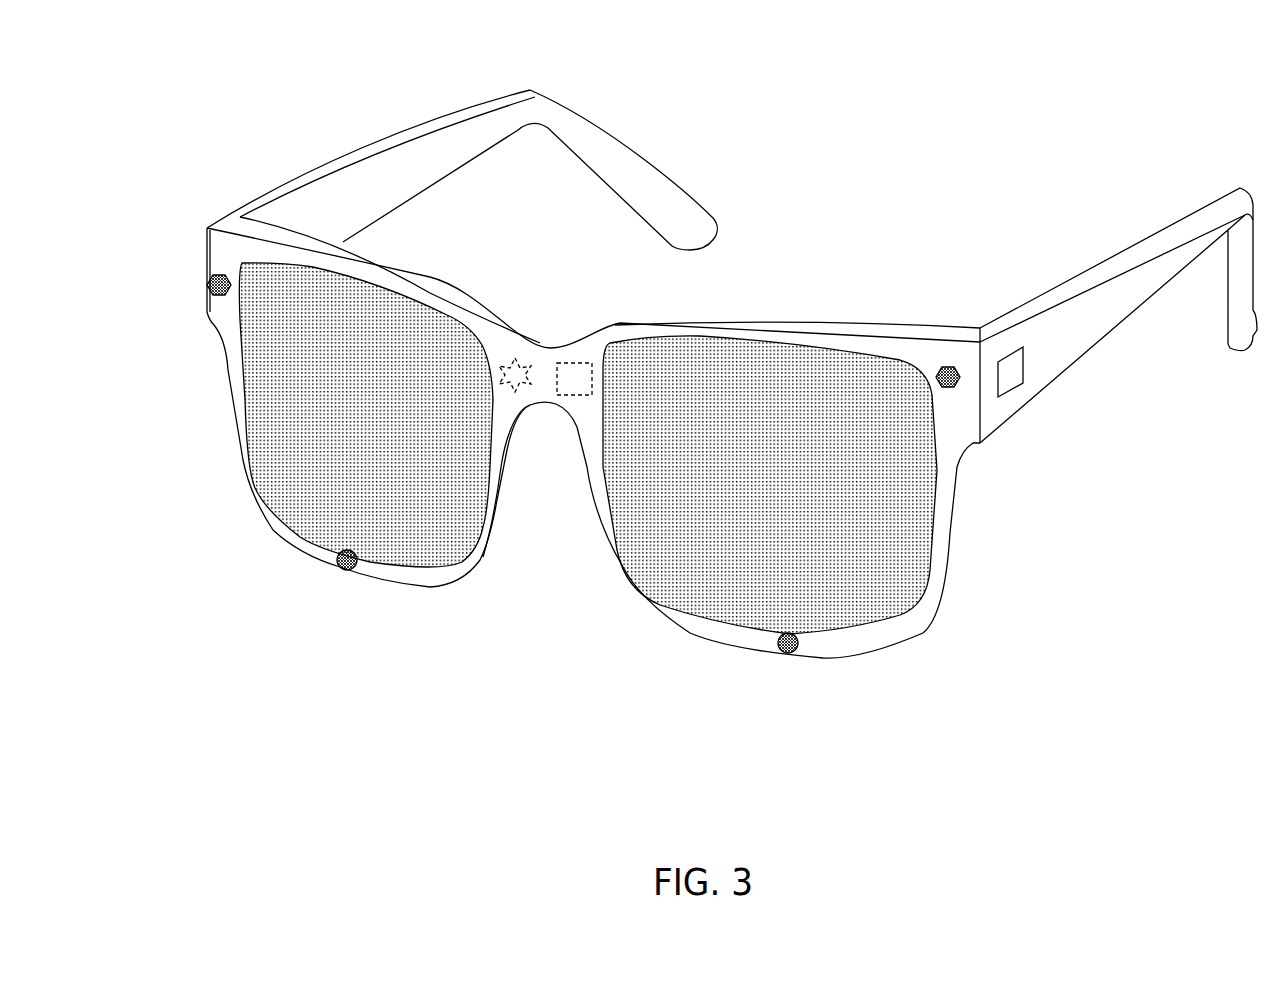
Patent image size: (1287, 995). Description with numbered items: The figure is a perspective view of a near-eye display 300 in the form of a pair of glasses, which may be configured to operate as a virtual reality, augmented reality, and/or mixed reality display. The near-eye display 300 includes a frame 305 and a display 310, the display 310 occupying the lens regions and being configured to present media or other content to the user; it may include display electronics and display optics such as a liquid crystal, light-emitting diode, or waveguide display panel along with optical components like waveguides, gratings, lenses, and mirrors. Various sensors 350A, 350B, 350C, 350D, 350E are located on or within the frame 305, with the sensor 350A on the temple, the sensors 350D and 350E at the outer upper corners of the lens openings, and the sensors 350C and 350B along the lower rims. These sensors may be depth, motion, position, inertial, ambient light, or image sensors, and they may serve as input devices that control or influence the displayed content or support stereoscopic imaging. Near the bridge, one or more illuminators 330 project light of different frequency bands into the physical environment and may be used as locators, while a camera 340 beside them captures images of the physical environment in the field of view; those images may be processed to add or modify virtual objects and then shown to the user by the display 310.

The near-eye display 300 is at (720, 48).
The frame 305 is at (1027, 297).
The display 310 is at (310, 500).
The illuminator 330 is at (507, 362).
The camera 340 is at (570, 370).
The sensor 350A is at (1010, 378).
The sensor 350B is at (790, 653).
The sensor 350C is at (348, 570).
The sensor 350D is at (207, 273).
The sensor 350E is at (950, 362).